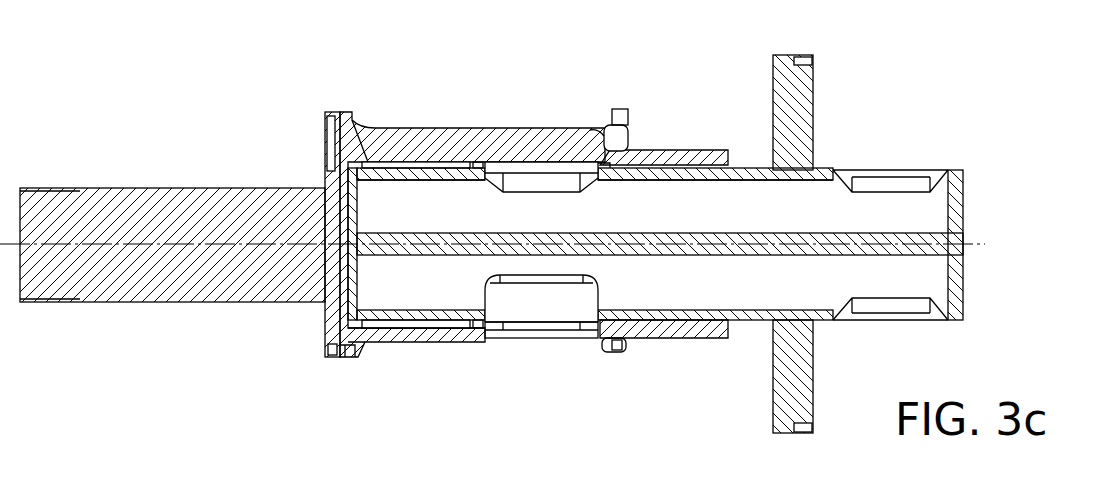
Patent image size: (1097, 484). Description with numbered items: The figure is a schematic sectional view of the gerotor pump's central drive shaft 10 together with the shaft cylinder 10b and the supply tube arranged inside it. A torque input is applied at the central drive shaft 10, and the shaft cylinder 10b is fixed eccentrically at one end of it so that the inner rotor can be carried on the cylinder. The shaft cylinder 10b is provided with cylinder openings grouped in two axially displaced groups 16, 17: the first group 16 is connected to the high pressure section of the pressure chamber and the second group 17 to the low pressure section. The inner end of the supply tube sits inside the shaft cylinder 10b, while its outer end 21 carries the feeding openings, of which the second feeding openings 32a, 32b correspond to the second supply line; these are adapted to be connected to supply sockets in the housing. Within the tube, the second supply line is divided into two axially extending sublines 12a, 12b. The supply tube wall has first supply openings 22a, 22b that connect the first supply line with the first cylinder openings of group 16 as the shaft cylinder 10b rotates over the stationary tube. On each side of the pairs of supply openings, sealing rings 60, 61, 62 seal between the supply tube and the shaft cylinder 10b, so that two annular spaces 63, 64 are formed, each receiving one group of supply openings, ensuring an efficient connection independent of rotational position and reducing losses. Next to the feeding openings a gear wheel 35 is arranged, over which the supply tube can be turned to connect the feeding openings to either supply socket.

The central drive shaft 10 is at (170, 215).
The shaft cylinder 10b is at (600, 132).
The subline of second supply line 12a is at (690, 282).
The subline of second supply line 12b is at (690, 205).
The group of first cylinder openings 16 is at (532, 327).
The group of second cylinder openings 17 is at (410, 145).
The outer end of supply tube 21 is at (988, 198).
The first supply opening 22a is at (558, 282).
The first supply opening 22b is at (555, 185).
The second feeding opening 32a is at (895, 285).
The second feeding opening 32b is at (900, 180).
The gear wheel 35 is at (815, 105).
The sealing ring 60 is at (362, 343).
The sealing ring 61 is at (470, 330).
The sealing ring 62 is at (607, 352).
The annular space 63 is at (400, 343).
The annular space 64 is at (495, 165).